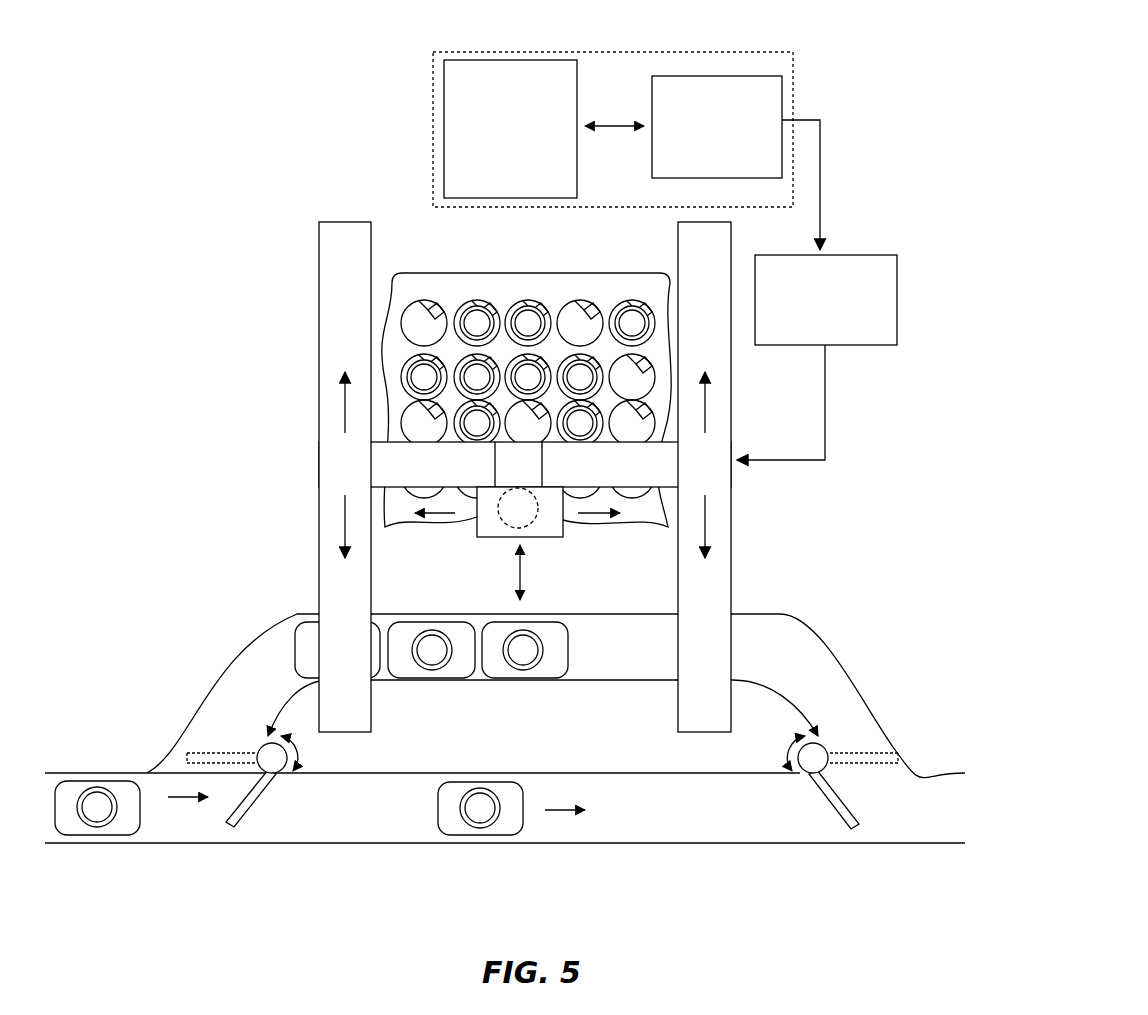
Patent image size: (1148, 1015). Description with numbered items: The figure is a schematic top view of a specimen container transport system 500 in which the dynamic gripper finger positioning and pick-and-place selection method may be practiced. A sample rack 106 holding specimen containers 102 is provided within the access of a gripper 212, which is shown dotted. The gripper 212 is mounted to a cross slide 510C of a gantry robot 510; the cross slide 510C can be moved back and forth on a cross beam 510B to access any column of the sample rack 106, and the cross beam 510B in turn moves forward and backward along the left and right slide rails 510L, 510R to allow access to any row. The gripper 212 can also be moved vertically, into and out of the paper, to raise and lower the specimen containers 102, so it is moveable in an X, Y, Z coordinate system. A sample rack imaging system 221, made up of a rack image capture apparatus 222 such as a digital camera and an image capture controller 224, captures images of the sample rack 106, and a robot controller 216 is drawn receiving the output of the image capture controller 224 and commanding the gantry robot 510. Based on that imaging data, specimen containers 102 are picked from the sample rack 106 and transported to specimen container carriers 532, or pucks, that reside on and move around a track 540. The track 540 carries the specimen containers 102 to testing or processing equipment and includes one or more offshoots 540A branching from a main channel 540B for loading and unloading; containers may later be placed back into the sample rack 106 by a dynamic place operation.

The specimen container transport system 500 is at (398, 186).
The gantry robot 510 is at (556, 500).
The left slide rail 510L is at (319, 313).
The right slide rail 510R is at (732, 540).
The cross beam 510B is at (319, 462).
The cross slide 510C is at (488, 540).
The gripper 212 is at (533, 522).
The specimen container 102 is at (470, 302).
The sample rack 106 is at (570, 264).
The sample rack imaging system 221 is at (645, 45).
The rack image capture apparatus 222 is at (505, 60).
The image capture controller 224 is at (782, 92).
The robot controller 216 is at (850, 255).
The track 540 is at (505, 824).
The offshoot 540A is at (262, 638).
The main channel 540B is at (705, 848).
The specimen container carrier 532 is at (512, 680).